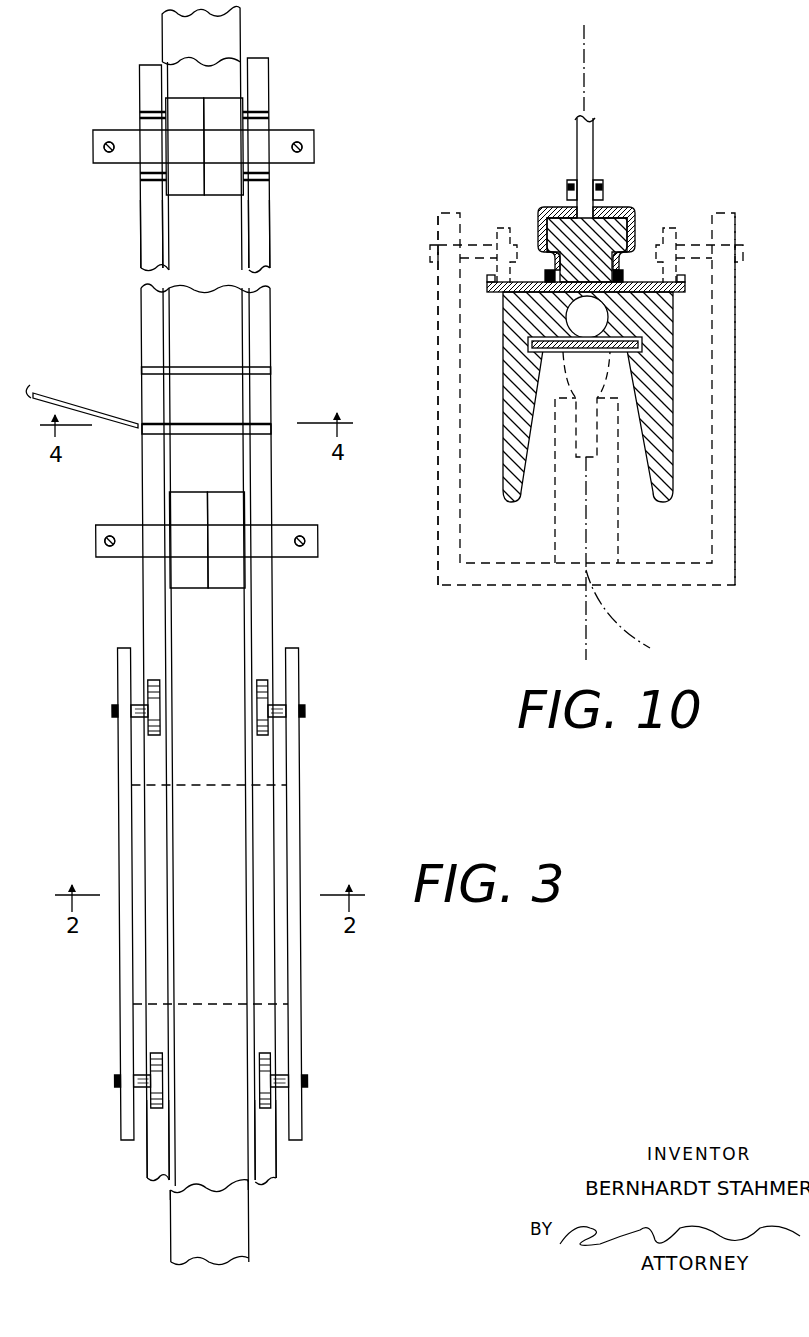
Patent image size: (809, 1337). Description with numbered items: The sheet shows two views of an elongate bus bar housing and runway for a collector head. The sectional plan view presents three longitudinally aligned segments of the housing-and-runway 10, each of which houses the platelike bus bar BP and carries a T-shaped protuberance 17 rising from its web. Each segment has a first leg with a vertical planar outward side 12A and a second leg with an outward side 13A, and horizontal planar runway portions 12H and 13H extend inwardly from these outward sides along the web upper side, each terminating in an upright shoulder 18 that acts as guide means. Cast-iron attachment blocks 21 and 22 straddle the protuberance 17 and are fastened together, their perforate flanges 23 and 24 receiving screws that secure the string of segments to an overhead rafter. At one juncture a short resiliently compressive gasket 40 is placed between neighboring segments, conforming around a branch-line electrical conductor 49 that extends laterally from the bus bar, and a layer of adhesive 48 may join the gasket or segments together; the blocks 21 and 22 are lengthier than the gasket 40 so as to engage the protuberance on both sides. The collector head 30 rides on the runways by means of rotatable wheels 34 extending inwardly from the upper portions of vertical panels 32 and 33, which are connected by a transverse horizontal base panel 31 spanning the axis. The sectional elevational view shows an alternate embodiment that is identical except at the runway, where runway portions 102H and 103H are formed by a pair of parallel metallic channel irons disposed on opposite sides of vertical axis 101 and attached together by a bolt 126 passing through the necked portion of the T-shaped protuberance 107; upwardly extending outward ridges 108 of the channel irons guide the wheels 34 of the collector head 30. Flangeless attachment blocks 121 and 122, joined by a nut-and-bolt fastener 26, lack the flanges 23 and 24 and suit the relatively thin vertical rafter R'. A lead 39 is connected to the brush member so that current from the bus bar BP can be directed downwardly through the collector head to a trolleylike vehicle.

In FIG. 3, the bus bar BP is at (243, 13).
In FIG. 10, the bus bar BP is at (585, 450).
In FIG. 3, the T-shaped protuberance 17 is at (207, 624).
In FIG. 3, the outward side of first leg 12A is at (139, 72).
In FIG. 3, the runway portion 12H is at (150, 240).
In FIG. 3, the outward side of second leg 13A is at (269, 78).
In FIG. 3, the runway portion 13H is at (258, 242).
In FIG. 3, the attachment block 21 is at (165, 192).
In FIG. 3, the attachment block 22 is at (245, 192).
In FIG. 3, the perforate flange 23 is at (138, 128).
In FIG. 3, the perforate flange 24 is at (274, 130).
In FIG. 3, the gasket 40 is at (270, 170).
In FIG. 3, the adhesive 48 is at (139, 176).
In FIG. 3, the branch-line electrical conductor 49 is at (40, 396).
In FIG. 3, the housing-and-runway 10 is at (138, 634).
In FIG. 3, the collector head 30 is at (208, 895).
In FIG. 10, the collector head 30 is at (739, 489).
In FIG. 3, the horizontal base panel 31 is at (133, 1006).
In FIG. 3, the vertical panel 32 is at (118, 809).
In FIG. 3, the vertical panel 33 is at (298, 766).
In FIG. 3, the rotatable wheel 34 is at (264, 680).
In FIG. 10, the rotatable wheel 34 is at (500, 228).
In FIG. 3, the upright shoulder 18 is at (171, 1203).
In FIG. 10, the vertical axis 101 is at (585, 48).
In FIG. 10, the rafter R' is at (601, 160).
In FIG. 10, the nut-and-bolt fastener 26 is at (572, 180).
In FIG. 10, the T-shaped protuberance 107 is at (600, 185).
In FIG. 10, the attachment block 121 is at (566, 208).
In FIG. 10, the attachment block 122 is at (618, 208).
In FIG. 10, the bolt 126 is at (545, 272).
In FIG. 10, the outward ridge 108 is at (487, 292).
In FIG. 10, the runway portion 102H is at (490, 280).
In FIG. 10, the runway portion 103H is at (690, 268).
In FIG. 10, the lead 39 is at (610, 622).